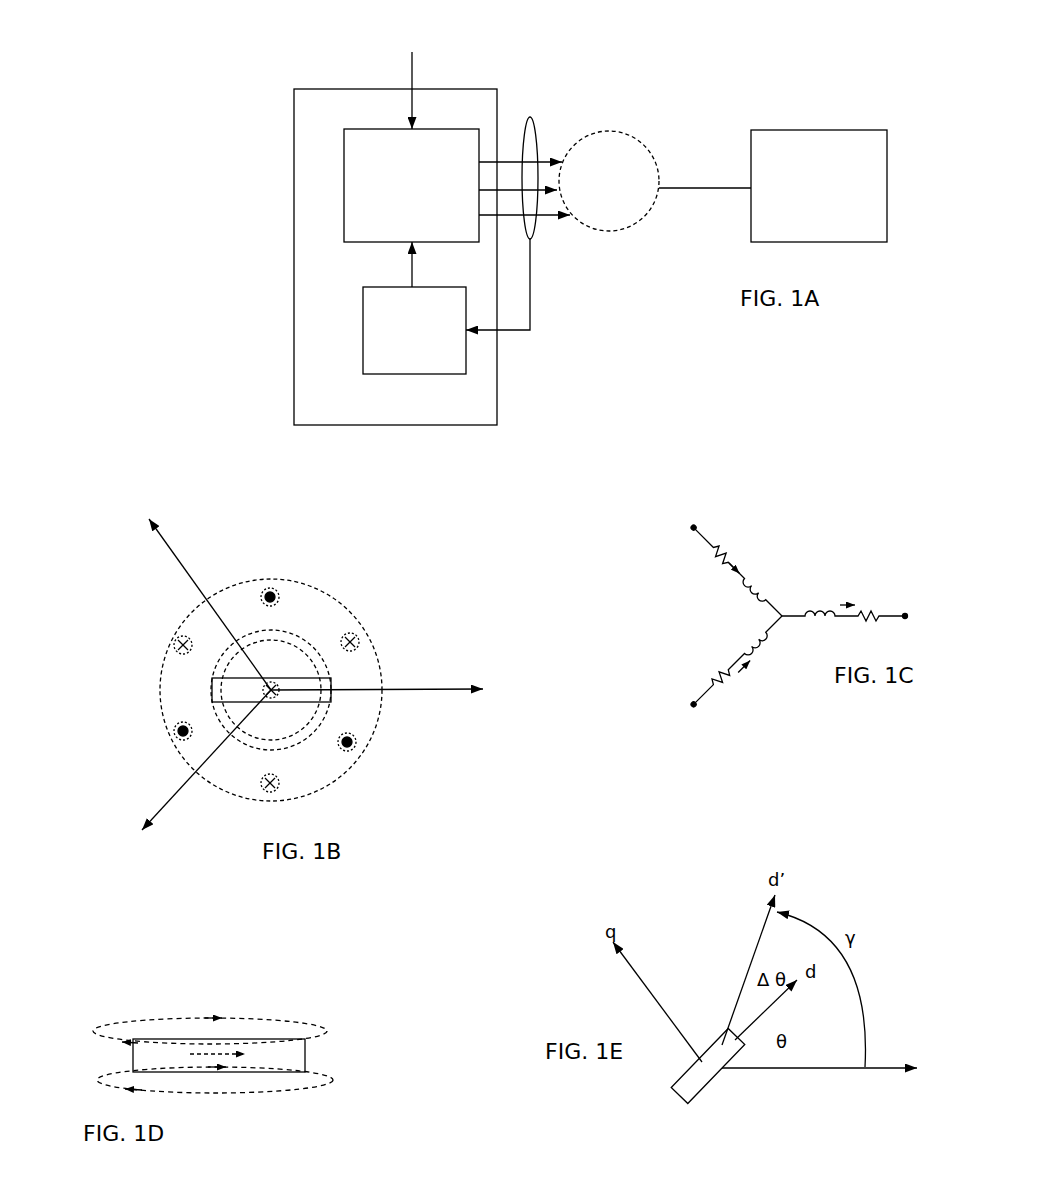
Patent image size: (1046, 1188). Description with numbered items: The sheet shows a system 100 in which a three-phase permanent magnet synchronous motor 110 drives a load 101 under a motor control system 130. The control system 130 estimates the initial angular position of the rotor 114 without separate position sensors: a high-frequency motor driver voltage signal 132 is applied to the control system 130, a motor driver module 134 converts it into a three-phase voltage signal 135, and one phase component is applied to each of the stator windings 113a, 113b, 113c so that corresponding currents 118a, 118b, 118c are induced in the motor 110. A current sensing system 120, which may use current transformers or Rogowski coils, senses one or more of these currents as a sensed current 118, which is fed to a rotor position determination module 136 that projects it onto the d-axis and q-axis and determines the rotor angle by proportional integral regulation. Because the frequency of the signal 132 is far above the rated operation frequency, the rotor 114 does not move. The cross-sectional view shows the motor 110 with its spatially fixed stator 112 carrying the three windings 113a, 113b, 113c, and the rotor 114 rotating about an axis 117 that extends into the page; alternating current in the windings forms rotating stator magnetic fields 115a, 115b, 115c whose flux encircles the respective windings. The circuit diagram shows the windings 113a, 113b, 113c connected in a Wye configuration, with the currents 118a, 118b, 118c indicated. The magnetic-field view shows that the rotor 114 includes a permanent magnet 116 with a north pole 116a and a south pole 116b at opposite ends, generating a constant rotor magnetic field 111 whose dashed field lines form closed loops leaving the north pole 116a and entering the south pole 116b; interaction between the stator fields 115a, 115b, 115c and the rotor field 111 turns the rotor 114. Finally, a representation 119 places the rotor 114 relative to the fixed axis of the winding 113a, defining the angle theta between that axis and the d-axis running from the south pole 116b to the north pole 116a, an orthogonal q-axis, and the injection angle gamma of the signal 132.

In FIG. 1A, the system 100 is at (326, 56).
In FIG. 1A, the load 101 is at (819, 186).
In FIG. 1A, the three-phase permanent magnet synchronous motor 110 is at (609, 181).
In FIG. 1B, the three-phase permanent magnet synchronous motor 110 is at (256, 552).
In FIG. 1D, the rotor magnetic field 111 is at (194, 1050).
In FIG. 1B, the stator 112 is at (333, 617).
In FIG. 1C, the stator 112 is at (853, 536).
In FIG. 1B, the stator winding 113a is at (403, 689).
In FIG. 1C, the stator winding 113a is at (927, 601).
In FIG. 1E, the stator winding 113a is at (844, 1071).
In FIG. 1B, the stator winding 113b is at (196, 587).
In FIG. 1C, the stator winding 113b is at (685, 514).
In FIG. 1B, the stator winding 113c is at (194, 774).
In FIG. 1C, the stator winding 113c is at (686, 719).
In FIG. 1B, the rotor 114 is at (297, 693).
In FIG. 1E, the rotor 114 is at (703, 1077).
In FIG. 1B, the stator magnetic field 115a is at (294, 690).
In FIG. 1B, the stator magnetic field 115b is at (274, 686).
In FIG. 1B, the stator magnetic field 115c is at (252, 680).
In FIG. 1D, the permanent magnet 116 is at (306, 1008).
In FIG. 1B, the north pole 116a is at (325, 686).
In FIG. 1D, the north pole 116a is at (276, 1058).
In FIG. 1E, the north pole 116a is at (733, 1042).
In FIG. 1B, the south pole 116b is at (223, 688).
In FIG. 1D, the south pole 116b is at (161, 1058).
In FIG. 1E, the south pole 116b is at (687, 1100).
In FIG. 1B, the axis 117 is at (270, 680).
In FIG. 1A, the sensed current 118 is at (520, 284).
In FIG. 1C, the current 118a is at (845, 599).
In FIG. 1C, the current 118b is at (736, 570).
In FIG. 1C, the current 118c is at (729, 662).
In FIG. 1E, the representation 119 is at (704, 925).
In FIG. 1A, the current sensing system 120 is at (535, 122).
In FIG. 1A, the motor control system 130 is at (395, 257).
In FIG. 1A, the high-frequency motor driver voltage signal 132 is at (413, 79).
In FIG. 1A, the motor driver module 134 is at (411, 185).
In FIG. 1A, the three-phase voltage signal 135 is at (507, 134).
In FIG. 1A, the rotor position determination module 136 is at (414, 308).